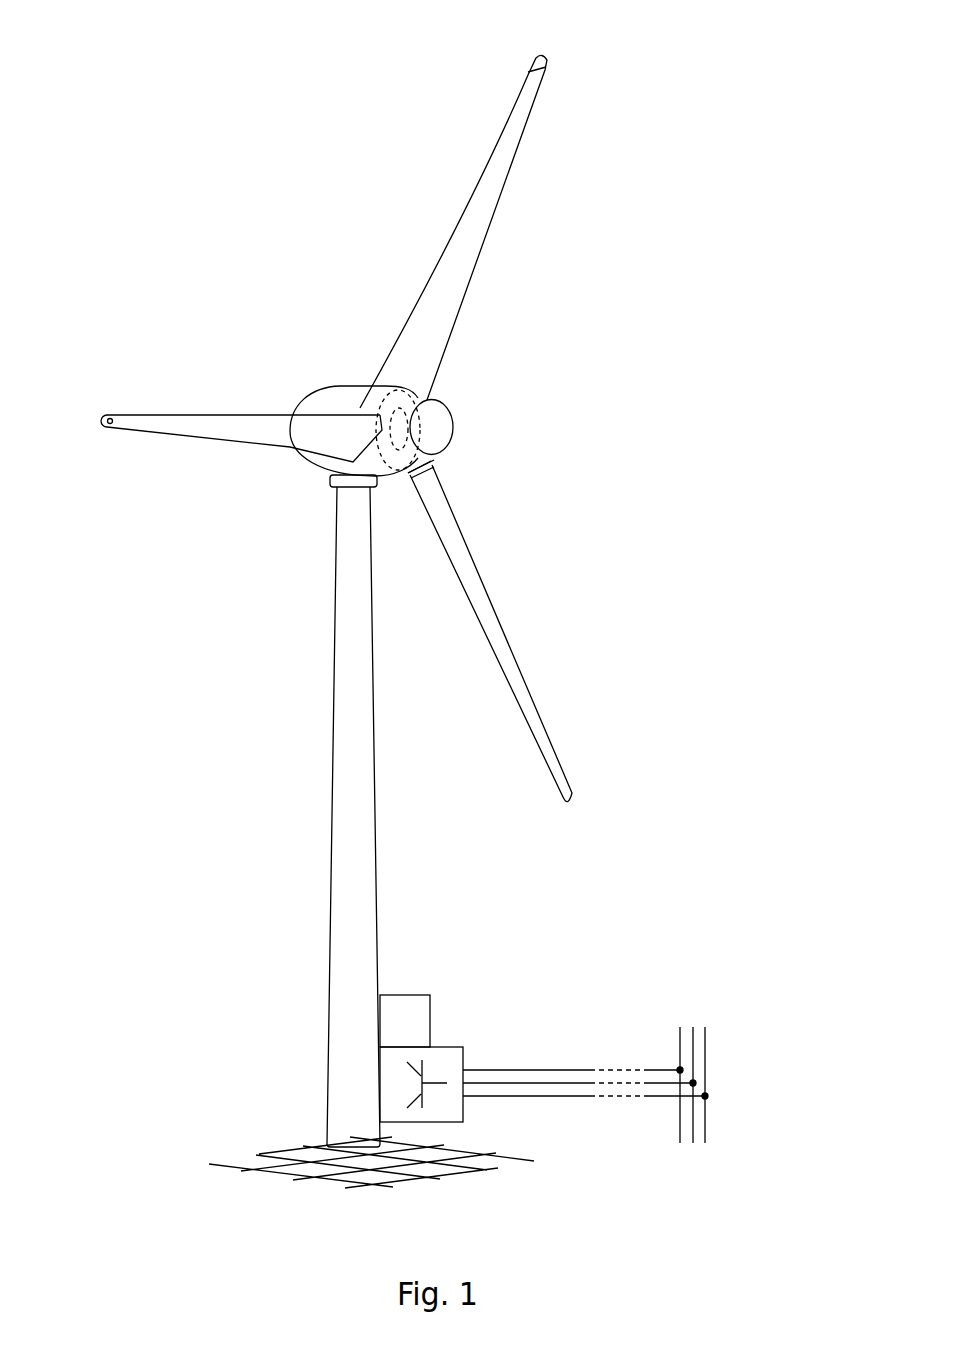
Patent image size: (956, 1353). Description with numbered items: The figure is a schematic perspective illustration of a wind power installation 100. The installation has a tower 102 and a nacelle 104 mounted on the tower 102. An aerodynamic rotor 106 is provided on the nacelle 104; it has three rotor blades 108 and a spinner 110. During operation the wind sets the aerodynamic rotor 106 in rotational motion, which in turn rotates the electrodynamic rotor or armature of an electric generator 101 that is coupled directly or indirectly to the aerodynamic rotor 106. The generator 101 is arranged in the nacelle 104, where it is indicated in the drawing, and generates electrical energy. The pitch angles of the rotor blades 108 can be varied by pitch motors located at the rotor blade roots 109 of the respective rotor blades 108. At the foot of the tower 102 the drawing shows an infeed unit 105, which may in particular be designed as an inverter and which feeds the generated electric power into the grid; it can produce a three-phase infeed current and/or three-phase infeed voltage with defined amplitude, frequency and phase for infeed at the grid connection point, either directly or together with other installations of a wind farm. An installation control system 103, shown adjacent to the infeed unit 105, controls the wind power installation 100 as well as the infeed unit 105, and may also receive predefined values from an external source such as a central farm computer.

The wind power installation 100 is at (292, 555).
The electric generator 101 is at (402, 393).
The tower 102 is at (362, 817).
The installation control system 103 is at (430, 1018).
The nacelle 104 is at (350, 410).
The infeed unit 105 is at (463, 1107).
The aerodynamic rotor 106 is at (518, 352).
The rotor blades 108 is at (488, 188).
The rotor blade roots 109 is at (438, 465).
The spinner 110 is at (435, 427).